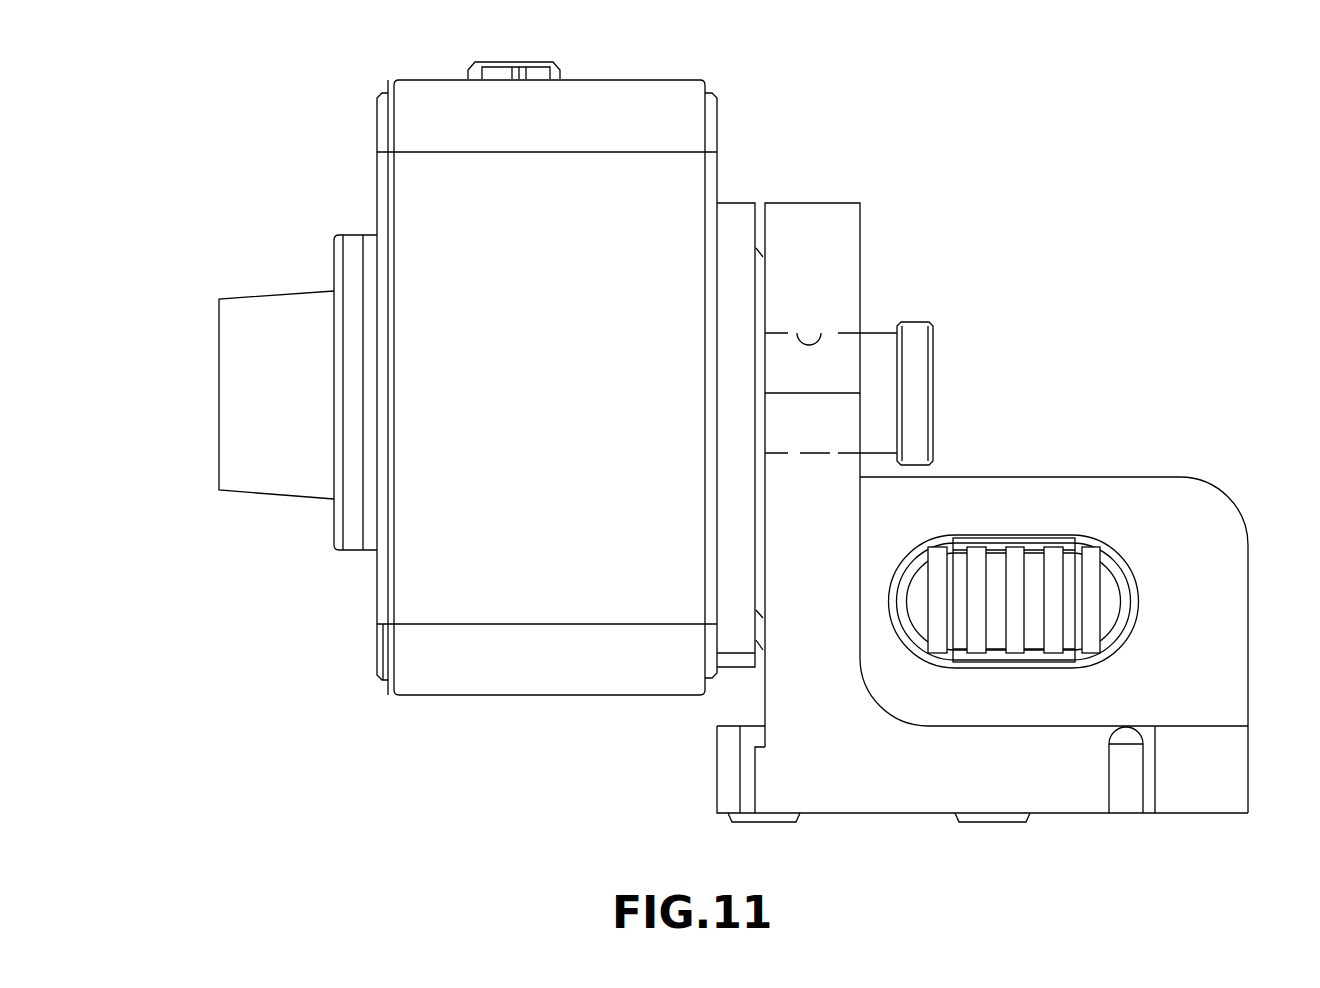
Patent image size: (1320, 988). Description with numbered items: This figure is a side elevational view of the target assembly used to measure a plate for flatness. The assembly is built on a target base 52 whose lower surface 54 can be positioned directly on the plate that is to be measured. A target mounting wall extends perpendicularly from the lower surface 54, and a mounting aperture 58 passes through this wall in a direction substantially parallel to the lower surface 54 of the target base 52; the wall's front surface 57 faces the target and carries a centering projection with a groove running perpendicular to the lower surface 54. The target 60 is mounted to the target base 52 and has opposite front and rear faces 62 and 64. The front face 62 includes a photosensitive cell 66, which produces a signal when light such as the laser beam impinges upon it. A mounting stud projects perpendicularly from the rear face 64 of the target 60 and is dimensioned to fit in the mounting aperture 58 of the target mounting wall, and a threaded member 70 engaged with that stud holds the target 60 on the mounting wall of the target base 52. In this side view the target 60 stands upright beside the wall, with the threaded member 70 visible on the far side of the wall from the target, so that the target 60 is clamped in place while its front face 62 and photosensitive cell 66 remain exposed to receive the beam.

The target base 52 is at (1110, 452).
The lower surface 54 is at (863, 813).
The front surface 57 is at (763, 690).
The mounting aperture 58 is at (822, 333).
The target 60 is at (647, 74).
The front face 62 is at (383, 130).
The rear face 64 is at (718, 147).
The photosensitive cell 66 is at (338, 255).
The threaded member 70 is at (933, 357).